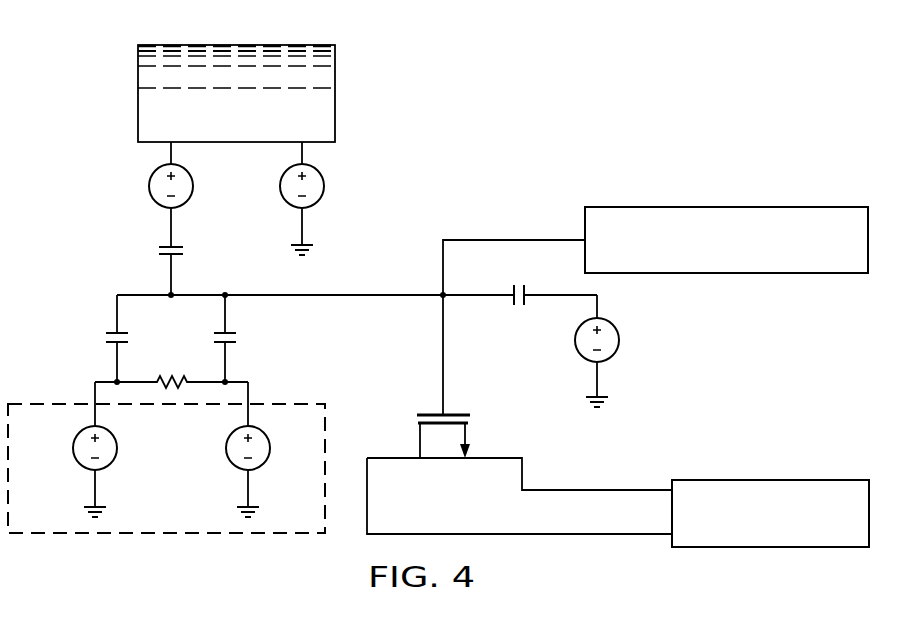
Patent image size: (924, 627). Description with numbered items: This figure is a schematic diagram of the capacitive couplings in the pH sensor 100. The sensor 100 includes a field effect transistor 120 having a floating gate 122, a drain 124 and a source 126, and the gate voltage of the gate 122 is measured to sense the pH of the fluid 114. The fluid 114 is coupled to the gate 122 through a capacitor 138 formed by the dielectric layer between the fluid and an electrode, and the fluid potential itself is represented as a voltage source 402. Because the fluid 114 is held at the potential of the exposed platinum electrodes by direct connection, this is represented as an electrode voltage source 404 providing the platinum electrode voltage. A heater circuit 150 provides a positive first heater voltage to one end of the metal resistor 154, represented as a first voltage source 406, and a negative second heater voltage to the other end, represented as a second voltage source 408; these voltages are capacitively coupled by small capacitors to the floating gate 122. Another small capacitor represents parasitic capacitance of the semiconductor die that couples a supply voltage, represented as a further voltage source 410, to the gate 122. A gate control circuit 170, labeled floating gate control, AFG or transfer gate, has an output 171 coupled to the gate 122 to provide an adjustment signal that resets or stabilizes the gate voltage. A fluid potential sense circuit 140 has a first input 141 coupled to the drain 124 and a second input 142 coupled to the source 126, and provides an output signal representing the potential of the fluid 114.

The sensor 100 is at (592, 80).
The fluid 114 is at (256, 130).
The field effect transistor 120 is at (446, 399).
The gate 122 is at (443, 393).
The drain 124 is at (400, 458).
The source 126 is at (485, 458).
The capacitor 138 is at (142, 248).
The fluid potential sense circuit 140 is at (770, 548).
The first input 141 is at (520, 537).
The second input 142 is at (638, 489).
The heater circuit 150 is at (62, 403).
The metal resistor 154 is at (167, 377).
The gate control circuit 170 is at (727, 206).
The output 171 is at (515, 237).
The voltage source 402 is at (150, 185).
The electrode voltage source 404 is at (325, 185).
The first voltage source 406 is at (80, 463).
The second voltage source 408 is at (232, 463).
The further voltage source 410 is at (613, 357).